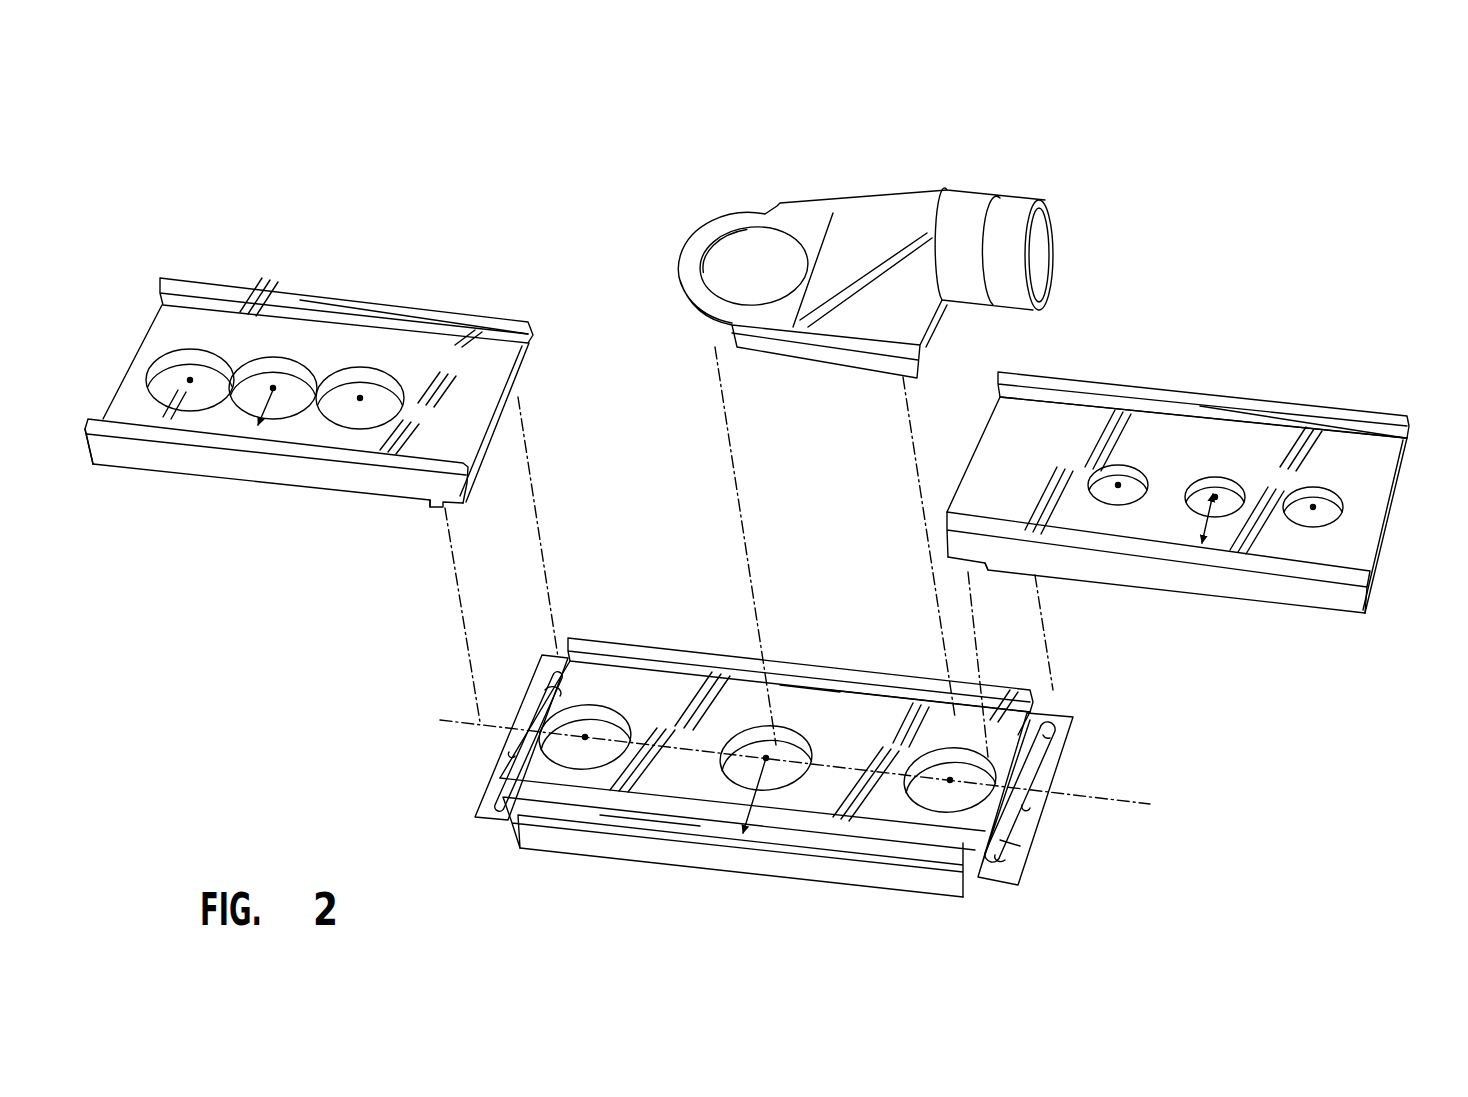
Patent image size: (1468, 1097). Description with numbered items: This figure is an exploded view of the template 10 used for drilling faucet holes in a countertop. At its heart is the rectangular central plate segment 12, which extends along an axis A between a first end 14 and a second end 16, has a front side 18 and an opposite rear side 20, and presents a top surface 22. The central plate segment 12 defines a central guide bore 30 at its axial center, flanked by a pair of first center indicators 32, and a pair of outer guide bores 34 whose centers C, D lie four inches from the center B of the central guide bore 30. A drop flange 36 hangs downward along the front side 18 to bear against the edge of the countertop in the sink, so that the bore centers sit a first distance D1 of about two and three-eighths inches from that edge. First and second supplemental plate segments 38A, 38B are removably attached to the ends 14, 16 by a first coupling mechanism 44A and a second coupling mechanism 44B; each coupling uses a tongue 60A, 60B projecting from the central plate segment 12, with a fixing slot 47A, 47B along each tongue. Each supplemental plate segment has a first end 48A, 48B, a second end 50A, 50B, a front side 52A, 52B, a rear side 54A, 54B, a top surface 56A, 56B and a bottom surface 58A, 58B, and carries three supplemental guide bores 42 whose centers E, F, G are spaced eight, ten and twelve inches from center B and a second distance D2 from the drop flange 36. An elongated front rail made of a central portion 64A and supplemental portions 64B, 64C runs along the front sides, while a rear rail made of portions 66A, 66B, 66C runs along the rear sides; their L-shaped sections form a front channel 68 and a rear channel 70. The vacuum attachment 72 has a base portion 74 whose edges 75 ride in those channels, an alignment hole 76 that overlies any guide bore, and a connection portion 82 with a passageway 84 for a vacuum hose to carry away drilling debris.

The template 10 is at (1118, 130).
The central plate segment 12 is at (903, 666).
The first end 14 is at (548, 680).
The second end 16 is at (1063, 740).
The front side 18 is at (573, 818).
The rear side 20 is at (673, 648).
The top surface 22 is at (803, 693).
The central guide bore 30 is at (732, 727).
The first center indicators 32 is at (766, 735).
The outer guide bores 34 is at (592, 708).
The drop flange 36 is at (920, 892).
The first supplemental plate segment 38A is at (207, 478).
The second supplemental plate segment 38B is at (1193, 602).
The supplemental guide bores 42 is at (337, 425).
The first coupling mechanism 44A is at (512, 705).
The second coupling mechanism 44B is at (1067, 763).
The fixing slot 47A is at (512, 752).
The fixing slot 47B is at (1027, 807).
The first end 48A is at (110, 400).
The first end 48B is at (1373, 580).
The second end 50A is at (490, 443).
The second end 50B is at (963, 500).
The front side 52A is at (333, 493).
The front side 52B is at (1248, 592).
The rear side 54A is at (297, 295).
The rear side 54B is at (1117, 380).
The top surface 56A is at (493, 370).
The top surface 56B is at (1380, 478).
The bottom surface 58A is at (428, 500).
The bottom surface 58B is at (960, 557).
The first tongue 60A is at (513, 759).
The second tongue 60B is at (1027, 844).
The central portion of front rail 64A is at (670, 805).
The supplemental portion of front rail 64B is at (113, 430).
The supplemental portion of front rail 64C is at (1130, 547).
The central portion of rear rail 66A is at (843, 673).
The supplemental portion of rear rail 66B is at (187, 288).
The supplemental portion of rear rail 66C is at (1343, 417).
The front channel 68 is at (1007, 857).
The rear channel 70 is at (1023, 733).
The vacuum attachment 72 is at (970, 183).
The base portion 74 is at (802, 213).
The edges 75 is at (835, 218).
The alignment hole 76 is at (720, 292).
The connection portion 82 is at (1018, 200).
The passageway 84 is at (1038, 263).
The axis A is at (782, 755).
The center of central guide bore B is at (766, 758).
The center of outer guide bore C is at (585, 738).
The center of outer guide bore D is at (950, 780).
The first distance D1 is at (766, 758).
The second distance D2 is at (276, 386).
The center of supplemental guide bore E is at (363, 403).
The center of supplemental guide bore F is at (273, 386).
The center of supplemental guide bore G is at (188, 378).